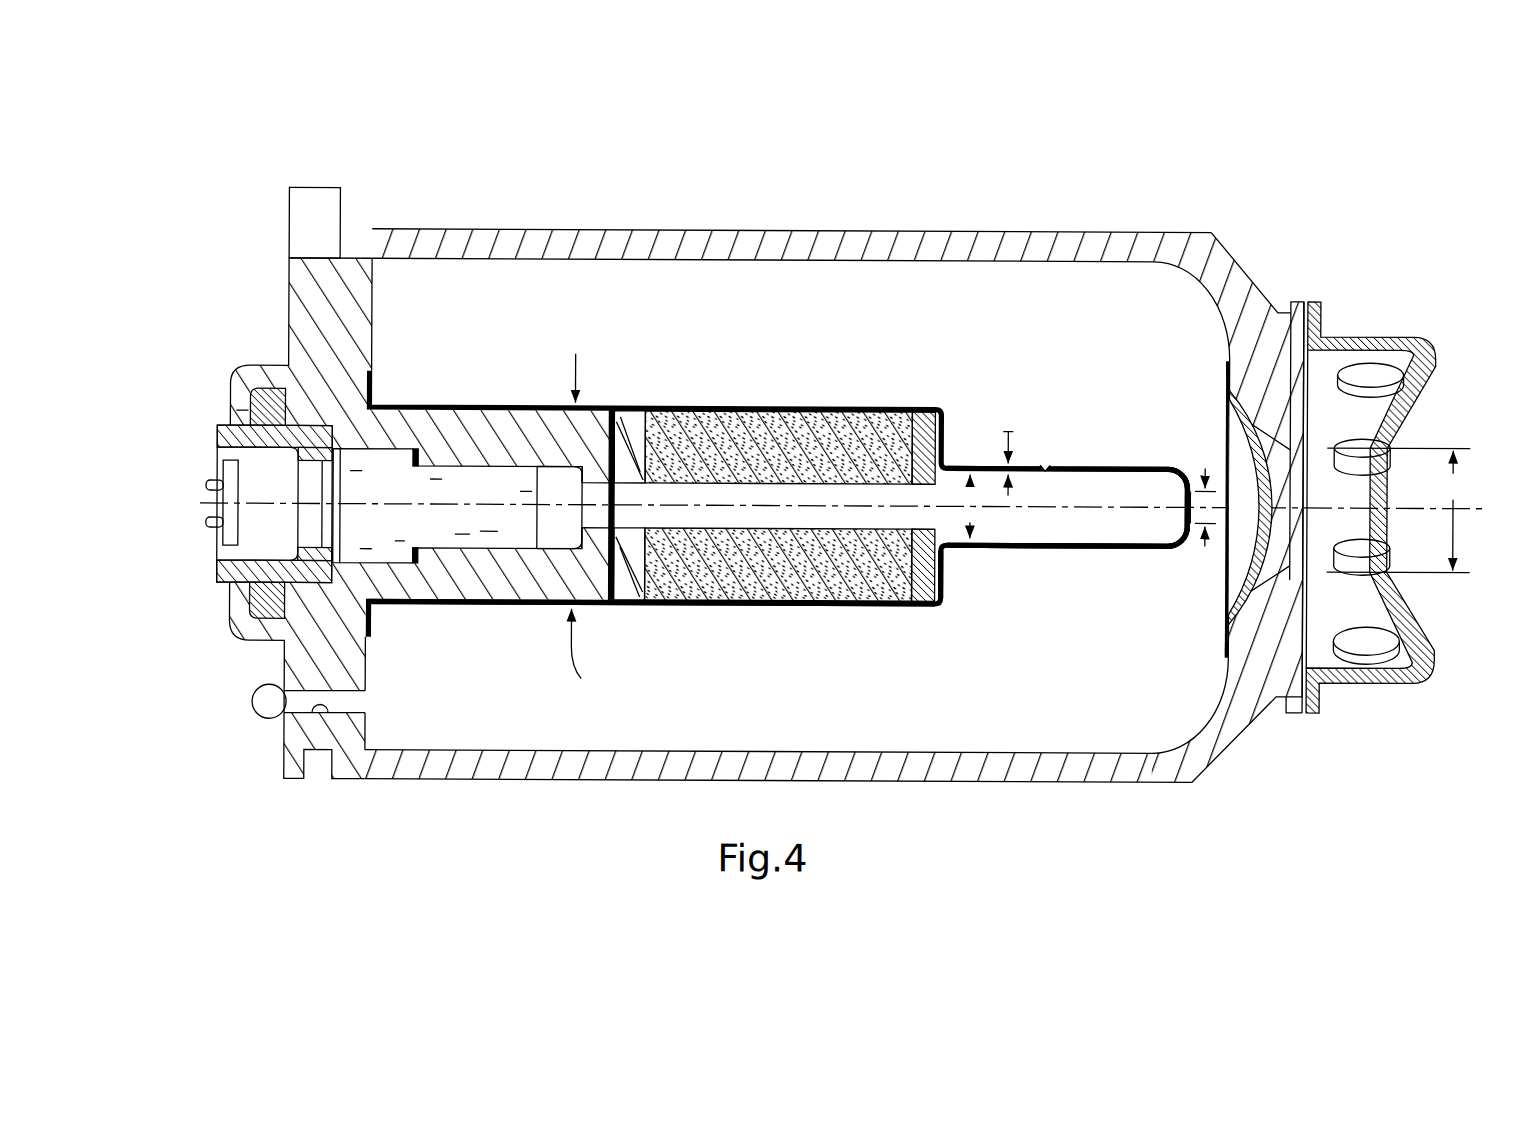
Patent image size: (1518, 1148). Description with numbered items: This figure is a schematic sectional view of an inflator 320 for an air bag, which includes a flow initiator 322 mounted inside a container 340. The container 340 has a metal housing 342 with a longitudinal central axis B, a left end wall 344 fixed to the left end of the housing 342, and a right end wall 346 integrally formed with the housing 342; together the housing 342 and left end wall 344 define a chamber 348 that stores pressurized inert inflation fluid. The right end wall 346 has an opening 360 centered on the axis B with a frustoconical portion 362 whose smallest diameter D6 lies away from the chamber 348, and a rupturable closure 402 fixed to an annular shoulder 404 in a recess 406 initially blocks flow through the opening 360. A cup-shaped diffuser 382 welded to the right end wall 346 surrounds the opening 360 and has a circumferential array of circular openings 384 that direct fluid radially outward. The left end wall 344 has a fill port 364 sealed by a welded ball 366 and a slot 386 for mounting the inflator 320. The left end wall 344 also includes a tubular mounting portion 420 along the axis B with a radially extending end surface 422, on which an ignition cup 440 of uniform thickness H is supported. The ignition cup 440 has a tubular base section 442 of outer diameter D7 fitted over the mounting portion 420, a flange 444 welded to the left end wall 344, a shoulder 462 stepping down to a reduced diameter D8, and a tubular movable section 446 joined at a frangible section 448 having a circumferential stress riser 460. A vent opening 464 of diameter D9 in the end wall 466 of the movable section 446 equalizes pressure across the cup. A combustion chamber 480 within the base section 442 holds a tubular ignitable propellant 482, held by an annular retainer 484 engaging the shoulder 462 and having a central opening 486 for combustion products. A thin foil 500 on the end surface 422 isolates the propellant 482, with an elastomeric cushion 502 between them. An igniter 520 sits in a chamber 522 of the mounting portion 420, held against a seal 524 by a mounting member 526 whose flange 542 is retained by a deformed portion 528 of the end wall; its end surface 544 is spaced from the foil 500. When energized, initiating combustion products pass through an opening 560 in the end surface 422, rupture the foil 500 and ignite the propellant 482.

The inflator 320 is at (824, 469).
The flow initiator 322 is at (1002, 396).
The container 340 is at (744, 468).
The housing 342 is at (806, 243).
The left end wall 344 is at (352, 244).
The right end wall 346 is at (1257, 666).
The chamber 348 is at (962, 304).
The opening 360 is at (1240, 445).
The frustoconical portion 362 is at (1398, 601).
The fill port 364 is at (313, 704).
The ball 366 is at (260, 707).
The diffuser 382 is at (1405, 503).
The circular openings 384 is at (1350, 458).
The slot 386 is at (312, 222).
The rupturable closure 402 is at (1181, 490).
The annular shoulder 404 is at (1227, 355).
The recess 406 is at (1221, 646).
The tubular mounting portion 420 is at (492, 525).
The end surface 422 is at (670, 476).
The ignition cup 440 is at (798, 513).
The tubular base section 442 is at (445, 604).
The flange 444 is at (378, 622).
The tubular movable section 446 is at (1097, 546).
The frangible section 448 is at (1053, 455).
The stress riser 460 is at (1077, 535).
The shoulder 462 is at (940, 575).
The vent opening 464 is at (1188, 503).
The end wall 466 is at (1190, 482).
The combustion chamber 480 is at (784, 524).
The ignitable propellant 482 is at (797, 572).
The retainer 484 is at (921, 604).
The circular opening 486 is at (905, 477).
The foil 500 is at (608, 397).
The elastomeric cushion 502 is at (633, 440).
The igniter 520 is at (461, 472).
The chamber 522 is at (552, 470).
The seal 524 is at (418, 446).
The mounting member 526 is at (212, 583).
The deformed portion 528 is at (241, 394).
The flange 542 is at (235, 476).
The end surface 544 is at (540, 525).
The opening 560 is at (611, 603).
The thickness H is at (1015, 459).
The smallest diameter of opening D6 is at (1399, 510).
The outer diameter of base section D7 is at (588, 528).
The reduced outer diameter D8 is at (967, 506).
The diameter of vent opening D9 is at (1200, 525).
The longitudinal central axis B is at (1470, 506).